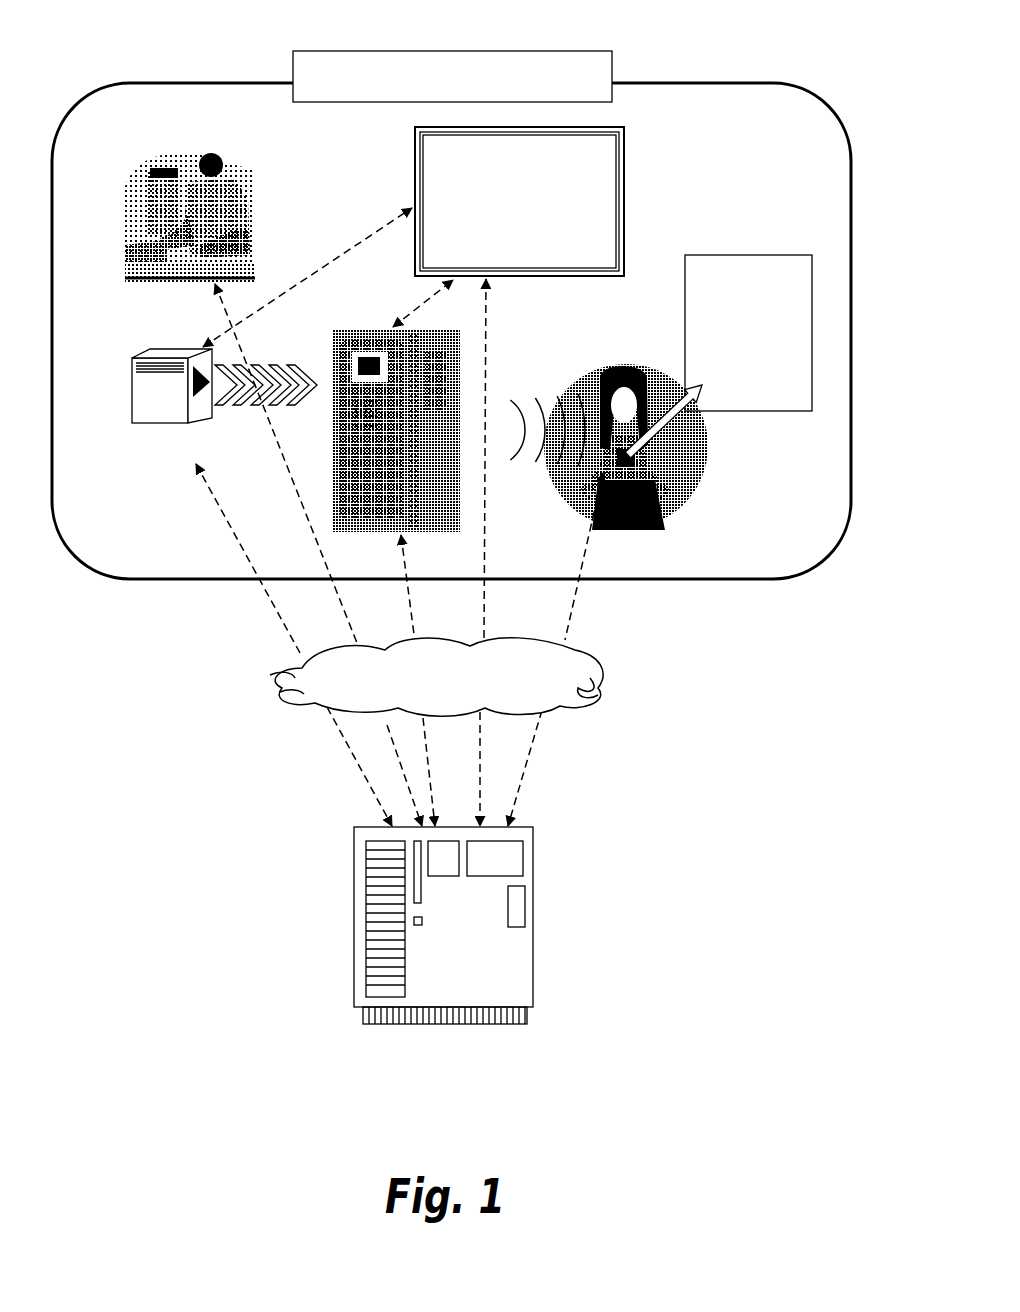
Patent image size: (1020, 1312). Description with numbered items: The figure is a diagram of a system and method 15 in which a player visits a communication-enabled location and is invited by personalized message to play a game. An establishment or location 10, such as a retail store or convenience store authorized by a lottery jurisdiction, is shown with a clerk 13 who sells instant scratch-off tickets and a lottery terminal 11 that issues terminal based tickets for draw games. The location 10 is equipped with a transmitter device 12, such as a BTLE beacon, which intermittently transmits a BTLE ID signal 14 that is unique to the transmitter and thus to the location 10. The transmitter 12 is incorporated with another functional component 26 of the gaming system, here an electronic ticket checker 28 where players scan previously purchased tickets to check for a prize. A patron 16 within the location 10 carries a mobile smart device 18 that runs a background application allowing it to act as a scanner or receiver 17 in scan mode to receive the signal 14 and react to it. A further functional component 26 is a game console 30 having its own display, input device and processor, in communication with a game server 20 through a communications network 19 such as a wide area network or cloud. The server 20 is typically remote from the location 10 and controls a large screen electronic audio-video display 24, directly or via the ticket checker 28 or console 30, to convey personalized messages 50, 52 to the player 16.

The establishment or location 10 is at (293, 62).
The lottery terminal 11 is at (152, 190).
The transmitter device 12 is at (205, 397).
The clerk 13 is at (199, 217).
The BTLE ID signal 14 is at (295, 405).
The system and method 15 is at (742, 62).
The patron 16 is at (629, 462).
The scanner/receiver device 17 is at (600, 474).
The mobile smart device 18 is at (640, 457).
The communications network 19 is at (535, 678).
The game server 20 is at (535, 905).
The electronic audio-video display 24 is at (527, 198).
The functional component 26 is at (150, 349).
The electronic ticket checker 28 is at (169, 413).
The game console 30 is at (387, 329).
The personalized message 50 is at (685, 330).
The personalized message 52 is at (432, 193).